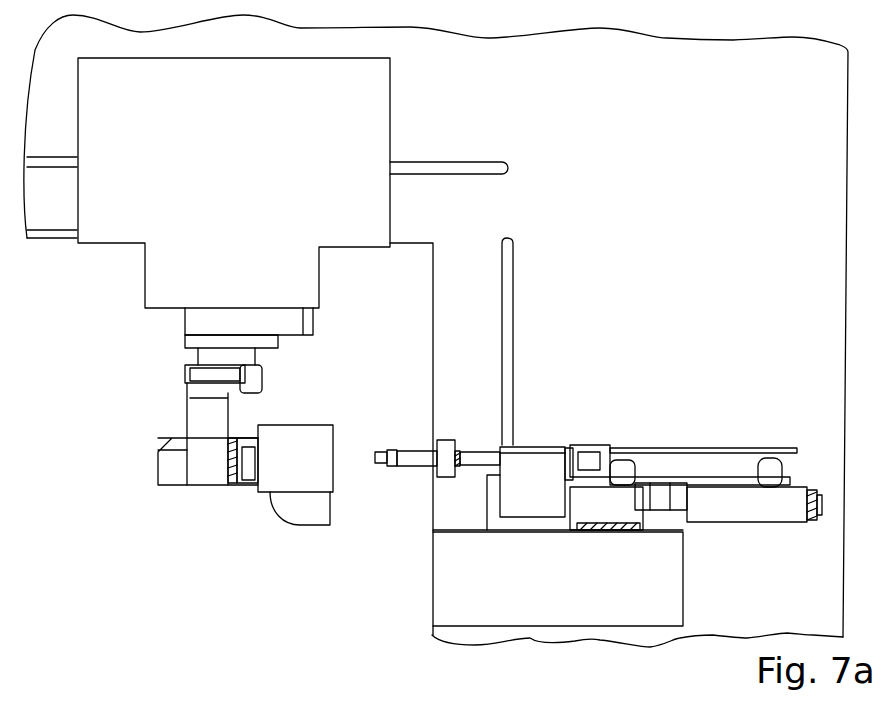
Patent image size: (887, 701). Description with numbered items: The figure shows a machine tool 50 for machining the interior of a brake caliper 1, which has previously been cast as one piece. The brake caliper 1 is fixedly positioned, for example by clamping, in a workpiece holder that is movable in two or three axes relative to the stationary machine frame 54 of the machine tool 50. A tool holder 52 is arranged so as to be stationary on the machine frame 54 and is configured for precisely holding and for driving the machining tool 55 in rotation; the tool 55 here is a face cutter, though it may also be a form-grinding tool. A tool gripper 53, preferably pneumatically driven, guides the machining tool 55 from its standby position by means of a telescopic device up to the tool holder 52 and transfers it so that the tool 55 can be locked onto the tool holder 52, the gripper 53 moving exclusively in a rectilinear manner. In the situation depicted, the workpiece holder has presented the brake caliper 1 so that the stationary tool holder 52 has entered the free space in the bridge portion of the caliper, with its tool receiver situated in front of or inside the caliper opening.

The brake caliper 1 is at (300, 537).
The machine tool 50 is at (436, 331).
The tool holder 52 is at (182, 430).
The tool gripper 53 is at (448, 465).
The machine frame 54 is at (721, 580).
The machining tool 55 is at (427, 460).